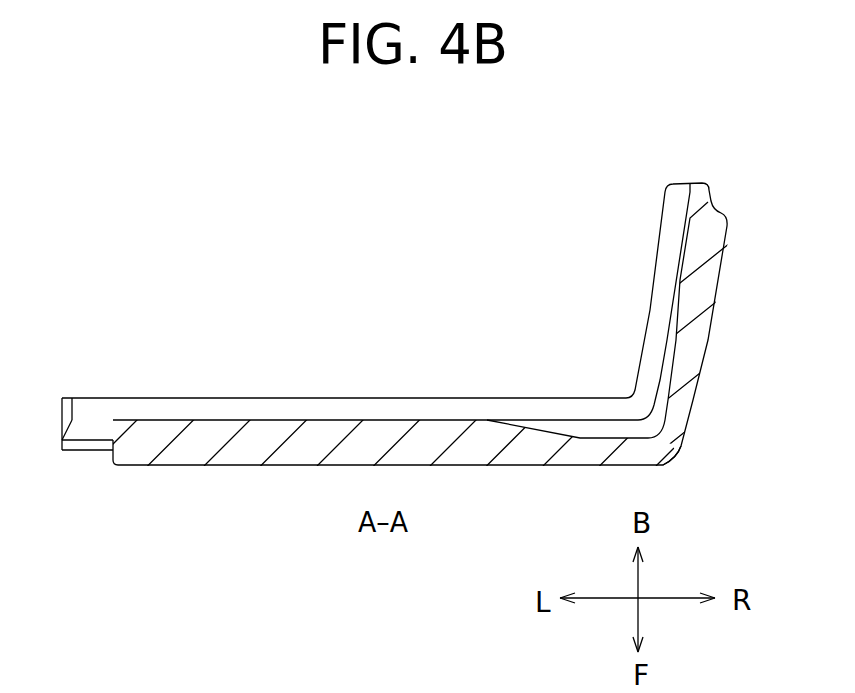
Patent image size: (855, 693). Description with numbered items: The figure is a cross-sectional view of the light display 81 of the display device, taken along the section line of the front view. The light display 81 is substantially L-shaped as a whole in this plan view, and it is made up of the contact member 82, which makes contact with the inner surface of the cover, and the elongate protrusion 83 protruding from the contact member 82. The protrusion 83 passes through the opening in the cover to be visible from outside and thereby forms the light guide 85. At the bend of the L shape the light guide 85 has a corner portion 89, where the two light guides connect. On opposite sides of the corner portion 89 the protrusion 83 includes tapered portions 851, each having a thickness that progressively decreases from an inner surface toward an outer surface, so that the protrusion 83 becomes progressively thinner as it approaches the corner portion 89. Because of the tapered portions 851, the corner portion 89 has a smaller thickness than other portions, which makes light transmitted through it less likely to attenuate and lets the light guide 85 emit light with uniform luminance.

The light display 81 is at (749, 192).
The tapered portion 851 is at (675, 353).
The contact member 82 is at (90, 451).
The protrusion 83 is at (410, 391).
The light guide 85 is at (236, 450).
The corner portion 89 is at (677, 457).